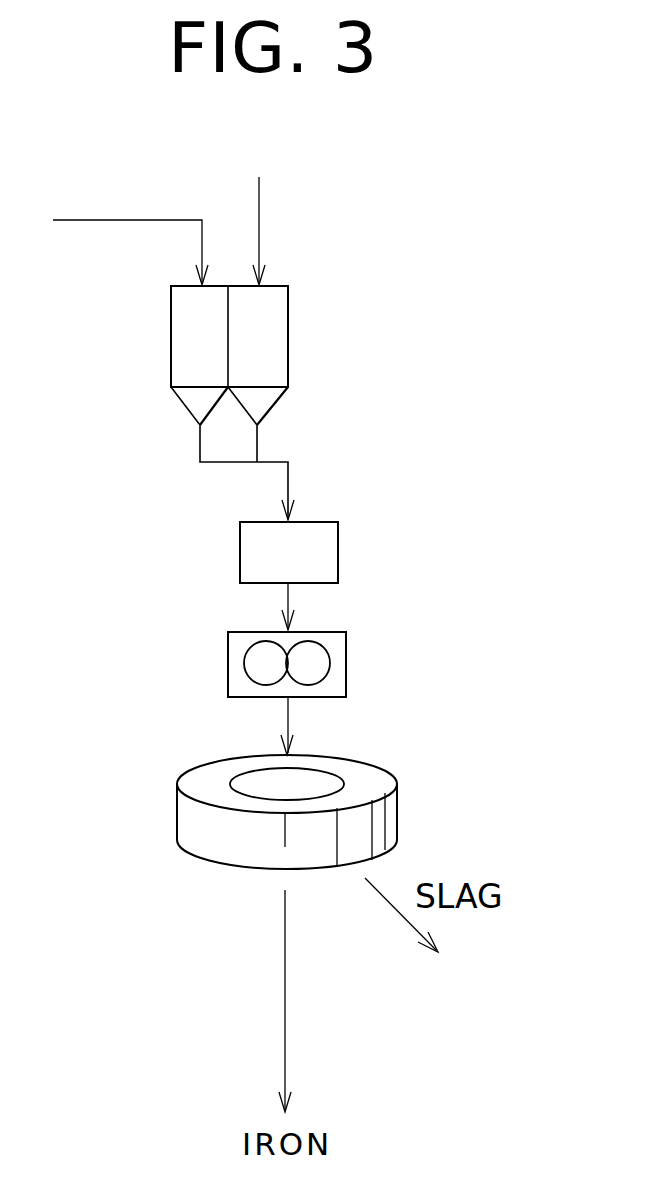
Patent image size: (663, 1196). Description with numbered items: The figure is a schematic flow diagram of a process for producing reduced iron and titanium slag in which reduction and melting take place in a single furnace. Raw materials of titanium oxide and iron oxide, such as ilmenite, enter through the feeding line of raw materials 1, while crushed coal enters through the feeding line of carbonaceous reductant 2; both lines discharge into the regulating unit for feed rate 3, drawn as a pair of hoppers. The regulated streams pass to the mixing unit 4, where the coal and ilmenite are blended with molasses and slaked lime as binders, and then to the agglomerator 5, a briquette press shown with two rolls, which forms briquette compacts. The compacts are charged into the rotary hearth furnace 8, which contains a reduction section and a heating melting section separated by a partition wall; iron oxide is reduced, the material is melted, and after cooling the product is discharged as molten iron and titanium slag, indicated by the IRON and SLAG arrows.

The feeding line of raw materials 1 is at (122, 220).
The feeding line of carbonaceous reductant 2 is at (263, 220).
The regulating unit for feed rate 3 is at (171, 357).
The mixing unit 4 is at (240, 556).
The agglomerator 5 is at (228, 667).
The rotary hearth furnace 8 is at (177, 819).